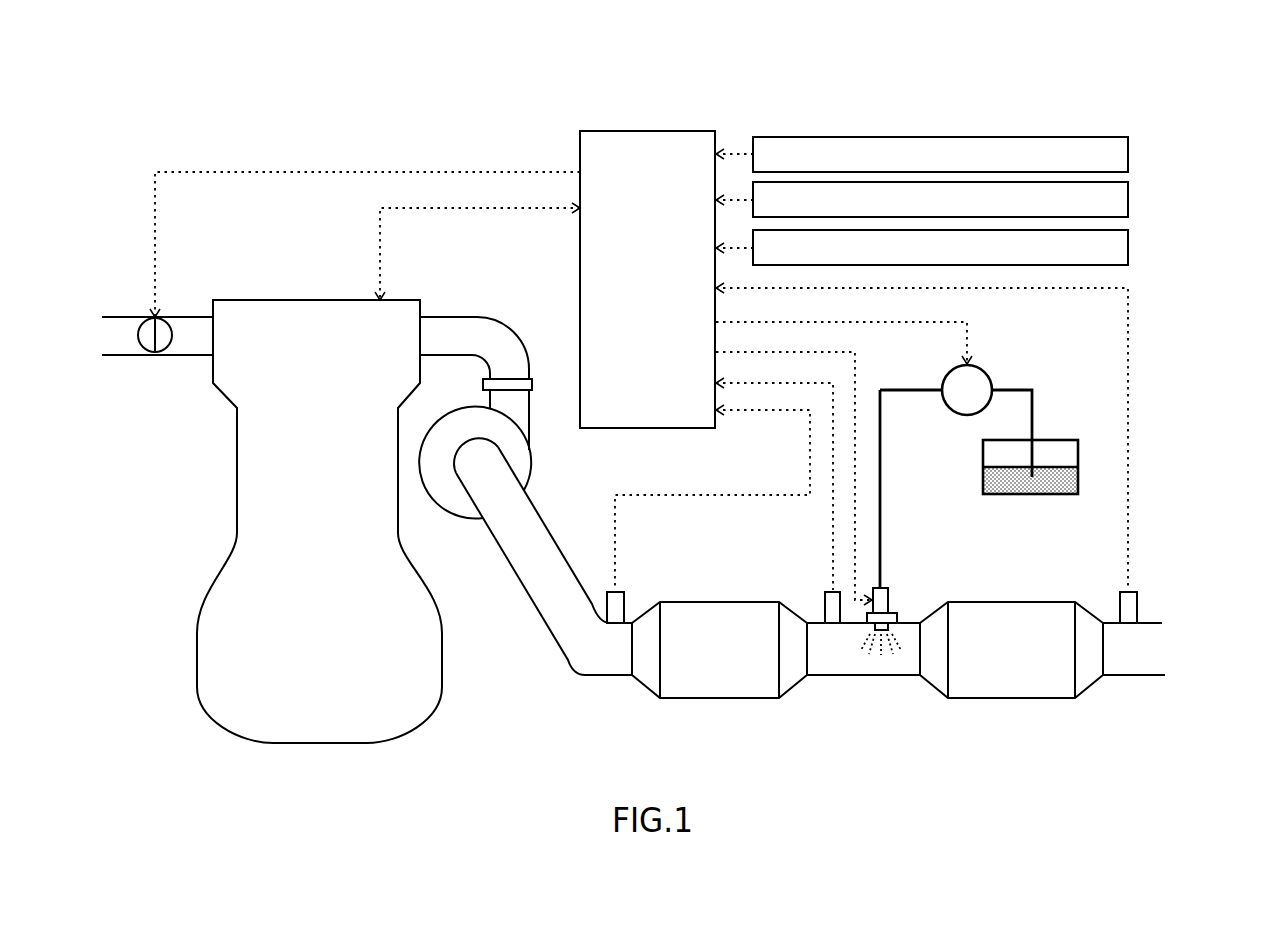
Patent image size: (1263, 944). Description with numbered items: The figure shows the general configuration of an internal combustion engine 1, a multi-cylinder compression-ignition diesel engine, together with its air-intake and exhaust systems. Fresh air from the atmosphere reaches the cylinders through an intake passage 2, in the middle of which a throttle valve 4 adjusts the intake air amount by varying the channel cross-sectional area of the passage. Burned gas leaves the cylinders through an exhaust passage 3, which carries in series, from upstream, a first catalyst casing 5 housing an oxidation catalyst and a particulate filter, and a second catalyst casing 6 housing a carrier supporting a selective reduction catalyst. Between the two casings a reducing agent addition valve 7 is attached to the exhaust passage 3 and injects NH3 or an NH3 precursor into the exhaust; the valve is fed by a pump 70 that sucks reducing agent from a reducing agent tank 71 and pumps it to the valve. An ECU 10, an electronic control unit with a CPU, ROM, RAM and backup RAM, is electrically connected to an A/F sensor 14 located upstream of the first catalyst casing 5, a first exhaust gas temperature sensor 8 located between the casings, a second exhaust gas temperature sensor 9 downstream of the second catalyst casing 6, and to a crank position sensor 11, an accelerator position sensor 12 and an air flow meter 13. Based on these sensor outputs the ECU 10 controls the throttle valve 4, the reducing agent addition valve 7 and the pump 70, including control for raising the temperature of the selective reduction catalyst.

The internal combustion engine 1 is at (272, 299).
The intake passage 2 is at (121, 315).
The exhaust passage 3 is at (457, 316).
The throttle valve 4 is at (151, 346).
The first catalyst casing 5 is at (722, 699).
The second catalyst casing 6 is at (1028, 699).
The reducing agent addition valve 7 is at (884, 587).
The first exhaust gas temperature sensor 8 is at (825, 591).
The second exhaust gas temperature sensor 9 is at (1138, 606).
The ECU 10 is at (667, 130).
The crank position sensor 11 is at (1130, 245).
The accelerator position sensor 12 is at (1130, 197).
The air flow meter 13 is at (1130, 152).
The A/F sensor 14 is at (626, 592).
The pump 70 is at (985, 373).
The reducing agent tank 71 is at (1066, 440).